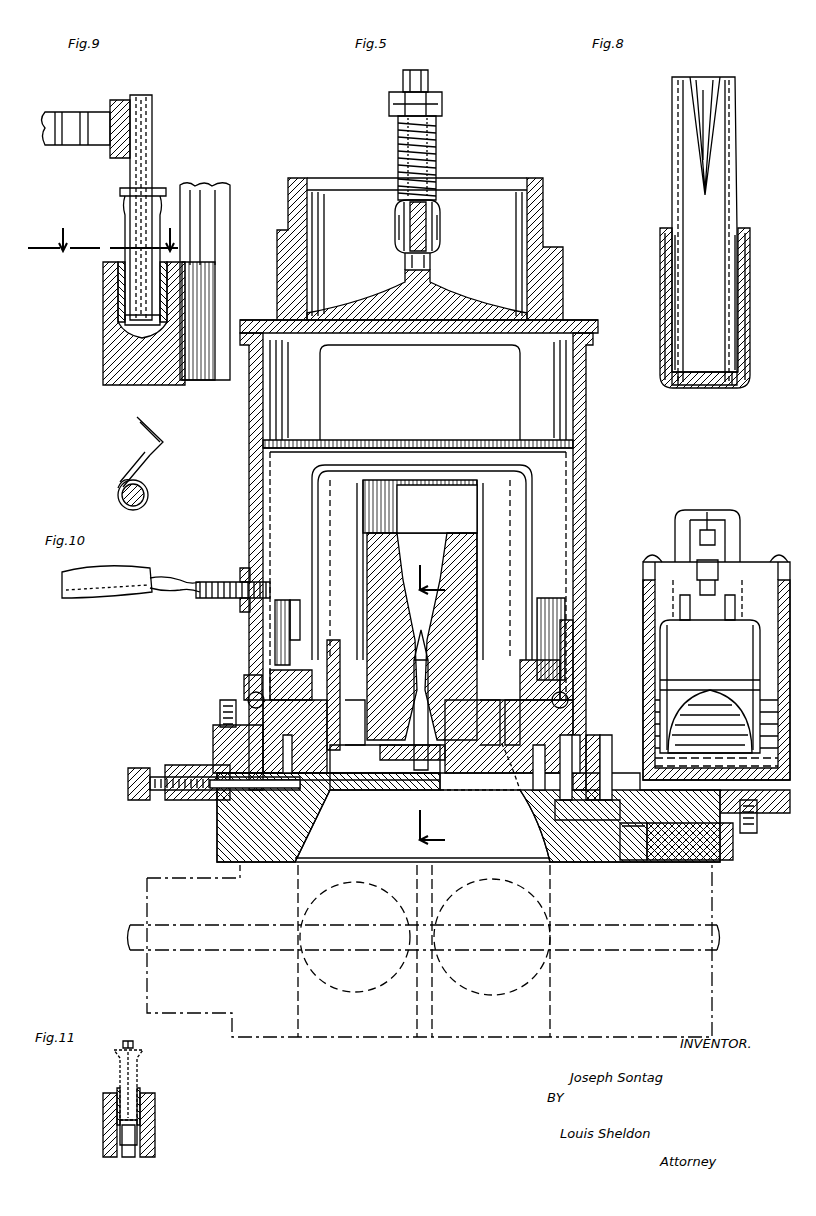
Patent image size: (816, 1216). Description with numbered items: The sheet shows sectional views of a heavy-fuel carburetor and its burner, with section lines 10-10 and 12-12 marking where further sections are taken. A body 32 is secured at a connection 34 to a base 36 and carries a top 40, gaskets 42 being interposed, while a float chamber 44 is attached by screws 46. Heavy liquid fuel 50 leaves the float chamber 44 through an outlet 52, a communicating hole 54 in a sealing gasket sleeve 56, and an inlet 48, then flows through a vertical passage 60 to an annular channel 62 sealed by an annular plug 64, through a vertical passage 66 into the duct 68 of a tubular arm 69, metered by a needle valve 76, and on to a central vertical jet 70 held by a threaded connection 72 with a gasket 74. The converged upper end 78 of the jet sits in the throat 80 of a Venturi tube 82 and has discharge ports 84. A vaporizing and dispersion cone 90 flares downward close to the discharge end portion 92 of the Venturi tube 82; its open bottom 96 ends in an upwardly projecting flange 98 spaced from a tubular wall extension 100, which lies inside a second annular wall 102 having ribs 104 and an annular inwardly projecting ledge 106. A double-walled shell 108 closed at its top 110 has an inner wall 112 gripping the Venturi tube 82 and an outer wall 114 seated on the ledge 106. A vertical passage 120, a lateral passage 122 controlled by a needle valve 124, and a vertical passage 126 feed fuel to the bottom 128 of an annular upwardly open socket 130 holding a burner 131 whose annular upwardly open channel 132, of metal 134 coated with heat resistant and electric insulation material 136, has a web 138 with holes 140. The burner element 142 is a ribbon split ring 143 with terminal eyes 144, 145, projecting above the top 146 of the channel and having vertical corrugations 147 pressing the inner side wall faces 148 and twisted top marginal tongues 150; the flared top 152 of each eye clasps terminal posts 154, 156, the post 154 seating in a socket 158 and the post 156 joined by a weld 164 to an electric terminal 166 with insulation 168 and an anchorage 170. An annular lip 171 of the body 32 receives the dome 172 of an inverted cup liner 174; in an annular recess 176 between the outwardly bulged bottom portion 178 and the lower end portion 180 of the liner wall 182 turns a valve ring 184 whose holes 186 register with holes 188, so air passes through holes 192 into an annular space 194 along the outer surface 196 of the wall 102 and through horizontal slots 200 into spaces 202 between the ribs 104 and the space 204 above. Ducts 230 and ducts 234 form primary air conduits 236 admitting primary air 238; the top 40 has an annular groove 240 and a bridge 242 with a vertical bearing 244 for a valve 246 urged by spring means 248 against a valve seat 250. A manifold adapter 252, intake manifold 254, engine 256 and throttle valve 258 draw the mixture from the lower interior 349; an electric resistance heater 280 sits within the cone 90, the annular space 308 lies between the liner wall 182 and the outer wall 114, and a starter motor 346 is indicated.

In FIG. 9, the section line 10- 10 is at (103, 230).
In FIG. 5, the section line 12- 12 is at (434, 699).
In FIG. 5, the body 32 is at (249, 480).
In FIG. 5, the connection 34 is at (228, 712).
In FIG. 5, the base 36 is at (210, 744).
In FIG. 5, the top 40 is at (566, 262).
In FIG. 5, the gaskets 42 is at (598, 328).
In FIG. 5, the float chamber 44 is at (755, 545).
In FIG. 5, the screws 46 is at (757, 825).
In FIG. 5, the inlet 48 is at (468, 801).
In FIG. 5, the heavy liquid fuel 50 is at (770, 658).
In FIG. 5, the outlet 52 is at (668, 862).
In FIG. 5, the communicating hole 54 is at (626, 862).
In FIG. 5, the sealing gasket sleeve 56 is at (636, 862).
In FIG. 5, the vertical passage 60 is at (592, 808).
In FIG. 5, the annular channel 62 is at (441, 746).
In FIG. 5, the annular plug 64 is at (292, 737).
In FIG. 5, the vertical passage 66 is at (292, 767).
In FIG. 5, the duct 68 is at (355, 790).
In FIG. 5, the tubular arm 69 is at (372, 800).
In FIG. 5, the central vertical jet 70 is at (380, 656).
In FIG. 5, the threaded connection 72 is at (408, 790).
In FIG. 5, the gasket 74 is at (400, 790).
In FIG. 5, the needle valve 76 is at (128, 794).
In FIG. 5, the converged upper end 78 is at (426, 685).
In FIG. 5, the throat 80 is at (422, 636).
In FIG. 5, the Venturi tube 82 is at (398, 560).
In FIG. 5, the discharge ports 84 is at (460, 650).
In FIG. 5, the vaporizing and dispersion cone 90 is at (455, 688).
In FIG. 5, the discharge end portion 92 is at (437, 709).
In FIG. 5, the bottom 96 is at (490, 773).
In FIG. 5, the upwardly projecting flange 98 is at (490, 760).
In FIG. 5, the tubular wall extension 100 is at (490, 708).
In FIG. 9, the second annular wall 102 is at (104, 320).
In FIG. 11, the second annular wall 102 is at (104, 1138).
In FIG. 5, the second annular wall 102 is at (491, 690).
In FIG. 5, the ribs 104 is at (322, 650).
In FIG. 5, the annular inwardly projecting ledge 106 is at (445, 719).
In FIG. 5, the double-walled shell 108 is at (478, 524).
In FIG. 5, the top 110 is at (526, 466).
In FIG. 5, the inner wall 112 is at (480, 545).
In FIG. 5, the outer wall 114 is at (530, 555).
In FIG. 5, the vertical passage 120 is at (592, 782).
In FIG. 5, the lateral passage 122 is at (551, 767).
In FIG. 5, the needle valve 124 is at (590, 762).
In FIG. 5, the vertical passage 126 is at (541, 780).
In FIG. 9, the bottom 128 is at (140, 338).
In FIG. 5, the bottom 128 is at (578, 665).
In FIG. 5, the annular upwardly open socket 130 is at (582, 630).
In FIG. 8, the burner 131 is at (752, 180).
In FIG. 5, the burner 131 is at (572, 602).
In FIG. 9, the annular upwardly open channel 132 is at (110, 262).
In FIG. 8, the annular upwardly open channel 132 is at (758, 262).
In FIG. 11, the annular upwardly open channel 132 is at (115, 1090).
In FIG. 8, the metal 134 is at (752, 268).
In FIG. 8, the heat resistant and electric insulation material 136 is at (662, 290).
In FIG. 8, the web 138 is at (745, 385).
In FIG. 9, the holes 140 is at (128, 315).
In FIG. 8, the holes 140 is at (722, 388).
In FIG. 11, the holes 140 is at (126, 1118).
In FIG. 9, the burner element 142 is at (235, 192).
In FIG. 8, the burner element 142 is at (738, 126).
In FIG. 10, the burner element 142 is at (140, 428).
In FIG. 5, the burner element 142 is at (580, 590).
In FIG. 8, the ribbon split ring 143 is at (718, 78).
In FIG. 10, the ribbon split ring 143 is at (145, 452).
In FIG. 10, the terminal eye 144 is at (150, 490).
In FIG. 11, the terminal eye 144 is at (140, 1070).
In FIG. 9, the terminal eye 145 is at (125, 220).
In FIG. 5, the terminal eye 145 is at (275, 622).
In FIG. 8, the top 146 is at (742, 228).
In FIG. 9, the vertical corrugations 147 is at (200, 230).
In FIG. 8, the vertical corrugations 147 is at (672, 150).
In FIG. 8, the inner side wall faces 148 is at (738, 350).
In FIG. 9, the top marginal tongues 150 is at (202, 190).
In FIG. 8, the top marginal tongues 150 is at (688, 78).
In FIG. 9, the top 152 is at (120, 190).
In FIG. 11, the top 152 is at (138, 1050).
In FIG. 11, the terminal post 154 is at (160, 1130).
In FIG. 9, the terminal post 156 is at (155, 147).
In FIG. 10, the terminal post 156 is at (120, 480).
In FIG. 5, the terminal post 156 is at (258, 606).
In FIG. 11, the socket 158 is at (130, 1152).
In FIG. 5, the socket 158 is at (268, 636).
In FIG. 9, the weld 164 is at (120, 100).
In FIG. 9, the electric terminal 166 is at (70, 112).
In FIG. 5, the electric terminal 166 is at (205, 575).
In FIG. 5, the insulation 168 is at (248, 560).
In FIG. 5, the anchorage 170 is at (242, 565).
In FIG. 5, the annular lip 171 is at (566, 432).
In FIG. 5, the dome 172 is at (400, 440).
In FIG. 5, the inverted cup liner 174 is at (450, 440).
In FIG. 5, the annular recess 176 is at (220, 716).
In FIG. 5, the outwardly bulged bottom portion 178 is at (262, 678).
In FIG. 5, the lower end portion 180 is at (583, 648).
In FIG. 5, the liner wall 182 is at (566, 515).
In FIG. 5, the valve ring 184 is at (220, 729).
In FIG. 5, the holes 186 is at (252, 690).
In FIG. 5, the holes 188 is at (598, 667).
In FIG. 5, the holes 192 is at (292, 720).
In FIG. 5, the annular space 194 is at (265, 650).
In FIG. 5, the outer surface 196 is at (263, 665).
In FIG. 5, the horizontal slots 200 is at (528, 722).
In FIG. 5, the spaces 202 is at (535, 622).
In FIG. 5, the space 204 is at (548, 595).
In FIG. 5, the ducts 230 is at (586, 366).
In FIG. 5, the ducts 234 is at (520, 835).
In FIG. 5, the primary air conduits 236 is at (580, 392).
In FIG. 5, the primary air 238 is at (475, 215).
In FIG. 5, the annular groove 240 is at (545, 200).
In FIG. 5, the bridge 242 is at (400, 252).
In FIG. 5, the vertical bearing 244 is at (440, 240).
In FIG. 5, the valve 246 is at (500, 312).
In FIG. 5, the spring means 248 is at (397, 133).
In FIG. 5, the valve seat 250 is at (518, 340).
In FIG. 5, the manifold adapter 252 is at (183, 860).
In FIG. 5, the intake manifold 254 is at (388, 636).
In FIG. 5, the engine 256 is at (432, 1112).
In FIG. 5, the throttle valve 258 is at (490, 1000).
In FIG. 5, the electric resistance heater 280 is at (470, 760).
In FIG. 5, the annular space 308 is at (588, 505).
In FIG. 5, the starter motor 346 is at (352, 745).
In FIG. 5, the lower interior 349 is at (480, 860).